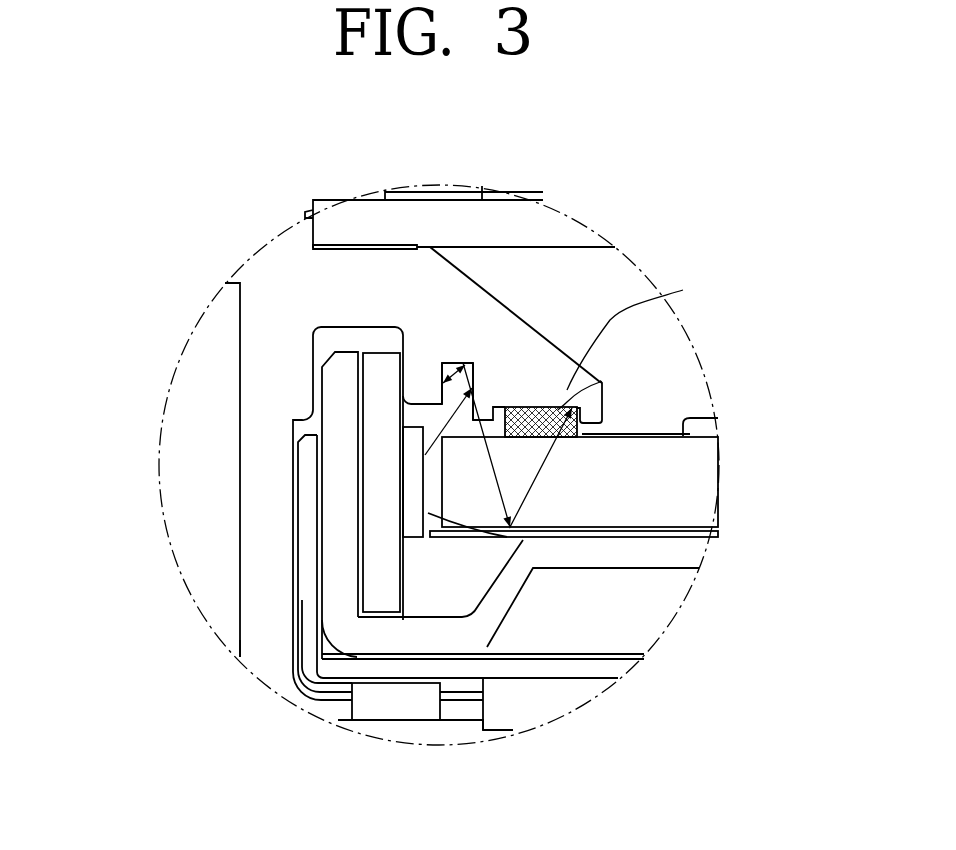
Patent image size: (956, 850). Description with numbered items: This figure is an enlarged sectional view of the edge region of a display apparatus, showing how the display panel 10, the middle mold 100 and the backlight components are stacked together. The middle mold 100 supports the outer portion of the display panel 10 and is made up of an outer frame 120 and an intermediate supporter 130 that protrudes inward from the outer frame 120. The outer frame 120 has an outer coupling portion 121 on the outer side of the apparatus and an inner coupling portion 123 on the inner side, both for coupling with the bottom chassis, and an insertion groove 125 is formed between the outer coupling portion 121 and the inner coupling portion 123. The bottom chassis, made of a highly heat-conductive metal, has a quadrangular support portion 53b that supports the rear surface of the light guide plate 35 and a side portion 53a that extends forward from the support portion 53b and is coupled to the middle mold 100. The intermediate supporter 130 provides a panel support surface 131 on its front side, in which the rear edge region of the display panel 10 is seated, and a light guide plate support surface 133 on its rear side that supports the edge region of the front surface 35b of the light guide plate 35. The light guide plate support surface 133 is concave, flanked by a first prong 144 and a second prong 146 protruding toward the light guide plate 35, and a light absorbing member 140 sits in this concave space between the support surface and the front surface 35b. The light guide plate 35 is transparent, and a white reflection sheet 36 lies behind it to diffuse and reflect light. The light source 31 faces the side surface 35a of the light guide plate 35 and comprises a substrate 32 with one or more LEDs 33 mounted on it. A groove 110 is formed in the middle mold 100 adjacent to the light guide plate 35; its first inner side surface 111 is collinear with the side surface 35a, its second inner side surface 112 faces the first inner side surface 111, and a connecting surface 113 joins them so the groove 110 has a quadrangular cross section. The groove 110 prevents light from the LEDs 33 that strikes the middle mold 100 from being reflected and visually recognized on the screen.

The display panel 10 is at (594, 233).
The middle mold 100 is at (288, 248).
The panel support surface 131 is at (358, 248).
The outer coupling portion 121 is at (267, 363).
The outer frame 120 is at (266, 657).
The insertion groove 125 is at (363, 336).
The inner coupling portion 123 is at (425, 380).
The first inner side surface 111 is at (427, 378).
The groove 110 is at (443, 362).
The connecting surface 113 is at (476, 392).
The intermediate supporter 130 is at (512, 345).
The second inner side surface 112 is at (500, 392).
The second prong 146 is at (520, 406).
The light absorbing member 140 is at (545, 395).
The light guide plate support surface 133 is at (600, 382).
The first prong 144 is at (593, 405).
The light guide plate 35 is at (695, 485).
The front surface 35b is at (712, 418).
The reflection sheet 36 is at (698, 534).
The side surface 35a is at (507, 537).
The side portion 53a is at (340, 503).
The support portion 53b is at (432, 643).
The substrate 32 is at (382, 598).
The LED 33 is at (425, 455).
The light source 31 is at (407, 808).